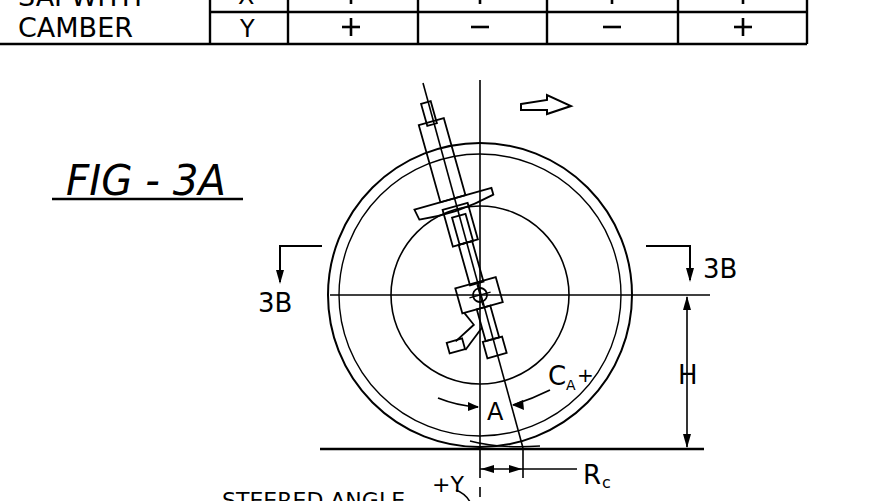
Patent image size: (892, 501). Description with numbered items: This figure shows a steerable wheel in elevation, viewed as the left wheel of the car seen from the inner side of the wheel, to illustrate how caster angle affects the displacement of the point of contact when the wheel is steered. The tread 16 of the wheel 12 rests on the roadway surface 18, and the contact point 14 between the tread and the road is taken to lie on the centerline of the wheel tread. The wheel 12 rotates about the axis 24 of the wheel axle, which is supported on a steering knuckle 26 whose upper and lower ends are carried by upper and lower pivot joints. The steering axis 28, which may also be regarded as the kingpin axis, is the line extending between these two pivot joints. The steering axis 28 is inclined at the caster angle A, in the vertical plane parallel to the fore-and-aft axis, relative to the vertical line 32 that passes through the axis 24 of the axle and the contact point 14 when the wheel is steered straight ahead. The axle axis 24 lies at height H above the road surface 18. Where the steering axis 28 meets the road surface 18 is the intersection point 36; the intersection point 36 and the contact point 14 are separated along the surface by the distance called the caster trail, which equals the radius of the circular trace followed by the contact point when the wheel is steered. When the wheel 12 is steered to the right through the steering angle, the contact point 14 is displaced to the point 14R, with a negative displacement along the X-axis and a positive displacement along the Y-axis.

The wheel 12 is at (636, 199).
The contact point 14 is at (478, 446).
The displaced contact point for rightward steering 14R is at (478, 292).
The tread 16 is at (600, 393).
The roadway surface 18 is at (358, 449).
The axis of the wheel axle 24 is at (490, 291).
The steering knuckle 26 is at (498, 328).
The steering axis 28 is at (472, 250).
The vertical line 32 is at (482, 128).
The intersection point 36 is at (527, 448).